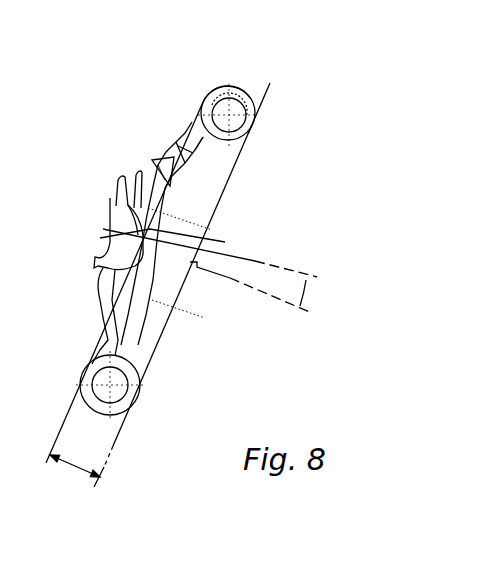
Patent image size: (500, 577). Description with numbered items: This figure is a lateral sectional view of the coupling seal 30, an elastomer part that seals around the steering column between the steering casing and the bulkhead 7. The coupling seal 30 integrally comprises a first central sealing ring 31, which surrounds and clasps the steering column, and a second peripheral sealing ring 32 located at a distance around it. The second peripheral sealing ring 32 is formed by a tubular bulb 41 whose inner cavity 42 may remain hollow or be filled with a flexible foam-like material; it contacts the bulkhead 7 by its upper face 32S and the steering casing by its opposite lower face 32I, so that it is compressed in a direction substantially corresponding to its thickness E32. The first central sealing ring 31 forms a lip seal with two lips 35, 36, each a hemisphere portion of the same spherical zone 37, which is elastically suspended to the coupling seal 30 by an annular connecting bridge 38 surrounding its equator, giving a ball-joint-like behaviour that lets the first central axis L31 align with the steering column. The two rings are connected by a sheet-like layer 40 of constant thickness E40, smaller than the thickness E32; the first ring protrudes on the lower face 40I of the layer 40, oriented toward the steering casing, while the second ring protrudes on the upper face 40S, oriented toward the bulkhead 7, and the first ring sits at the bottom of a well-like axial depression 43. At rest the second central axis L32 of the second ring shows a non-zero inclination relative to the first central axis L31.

The bulkhead 7 is at (105, 468).
The coupling seal 30 is at (257, 170).
The first central sealing ring 31 is at (134, 184).
The second peripheral sealing ring 32 is at (240, 84).
The lower face 32I is at (195, 100).
The upper face 32S is at (256, 126).
The lip 35 is at (191, 230).
The lip 36 is at (110, 203).
The spherical zone 37 is at (106, 256).
The annular connecting bridge 38 is at (117, 180).
The layer 40 is at (100, 348).
The inner surface of link 40I is at (170, 135).
The second face 40S is at (196, 152).
The tubular bulb 41 is at (216, 106).
The inner cavity 42 is at (219, 99).
The axial depression 43 is at (180, 183).
The thickness of the second sealing ring E32 is at (75, 467).
The thickness of the layer E40 is at (176, 141).
The first central axis L31 is at (287, 272).
The second central axis L32 is at (278, 300).